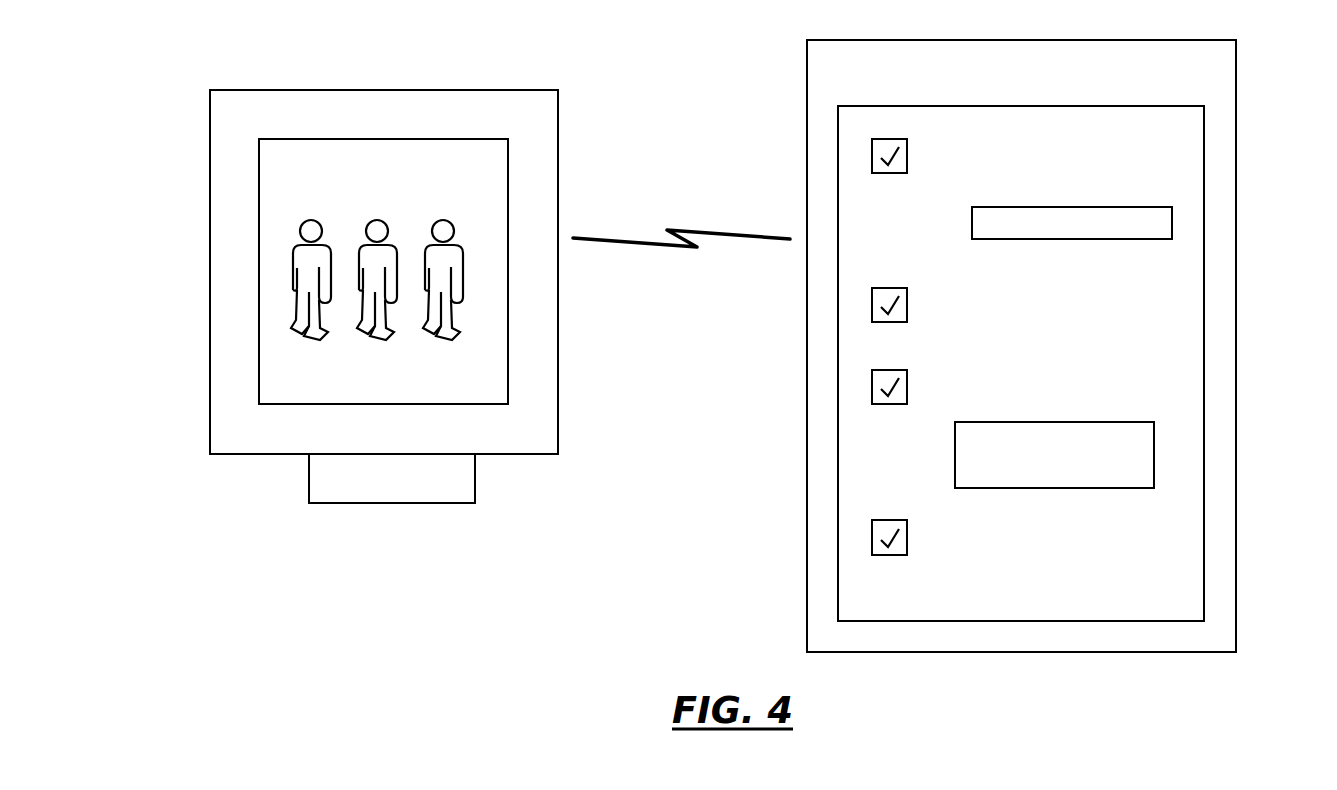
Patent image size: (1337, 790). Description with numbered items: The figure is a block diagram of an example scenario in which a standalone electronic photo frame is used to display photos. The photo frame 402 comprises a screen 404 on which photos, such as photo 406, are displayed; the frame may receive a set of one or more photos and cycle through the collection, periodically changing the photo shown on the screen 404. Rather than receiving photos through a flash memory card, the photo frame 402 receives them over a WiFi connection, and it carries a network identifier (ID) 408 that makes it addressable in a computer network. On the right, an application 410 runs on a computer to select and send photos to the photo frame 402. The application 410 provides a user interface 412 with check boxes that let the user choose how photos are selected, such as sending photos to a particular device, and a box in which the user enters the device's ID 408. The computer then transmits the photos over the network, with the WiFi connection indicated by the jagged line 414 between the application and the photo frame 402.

The photo frame 402 is at (508, 89).
The screen 404 is at (259, 272).
The photo 406 is at (285, 323).
The network identifier (ID) 408 is at (392, 478).
The application 410 is at (1021, 346).
The user interface 412 is at (1204, 320).
The jagged line 414 is at (682, 222).